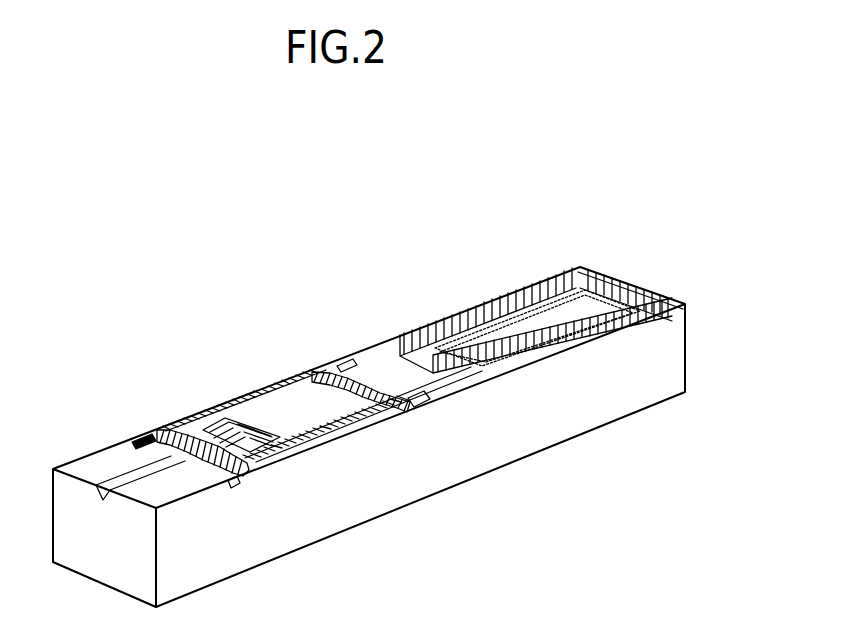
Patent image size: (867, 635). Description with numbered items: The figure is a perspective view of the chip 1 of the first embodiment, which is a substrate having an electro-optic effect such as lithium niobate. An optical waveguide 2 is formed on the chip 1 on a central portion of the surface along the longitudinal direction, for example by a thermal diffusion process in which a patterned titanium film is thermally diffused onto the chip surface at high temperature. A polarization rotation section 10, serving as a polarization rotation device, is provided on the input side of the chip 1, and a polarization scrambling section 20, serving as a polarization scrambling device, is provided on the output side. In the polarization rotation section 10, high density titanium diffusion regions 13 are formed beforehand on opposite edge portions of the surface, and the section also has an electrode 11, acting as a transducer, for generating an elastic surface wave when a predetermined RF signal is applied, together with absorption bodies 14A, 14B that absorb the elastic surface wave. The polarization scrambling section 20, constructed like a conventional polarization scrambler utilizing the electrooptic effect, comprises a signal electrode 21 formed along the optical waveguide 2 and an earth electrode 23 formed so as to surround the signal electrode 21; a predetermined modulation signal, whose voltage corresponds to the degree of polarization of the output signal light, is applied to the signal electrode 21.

The chip 1 is at (83, 562).
The optical waveguide 2 is at (137, 472).
The polarization rotation section 10 is at (108, 370).
The electrode 11 is at (278, 468).
The high density titanium diffusion regions 13 is at (140, 436).
The absorption body 14A is at (200, 430).
The absorption body 14B is at (312, 370).
The polarization scrambling section 20 is at (437, 296).
The signal electrode 21 is at (637, 320).
The earth electrode 23 is at (497, 304).